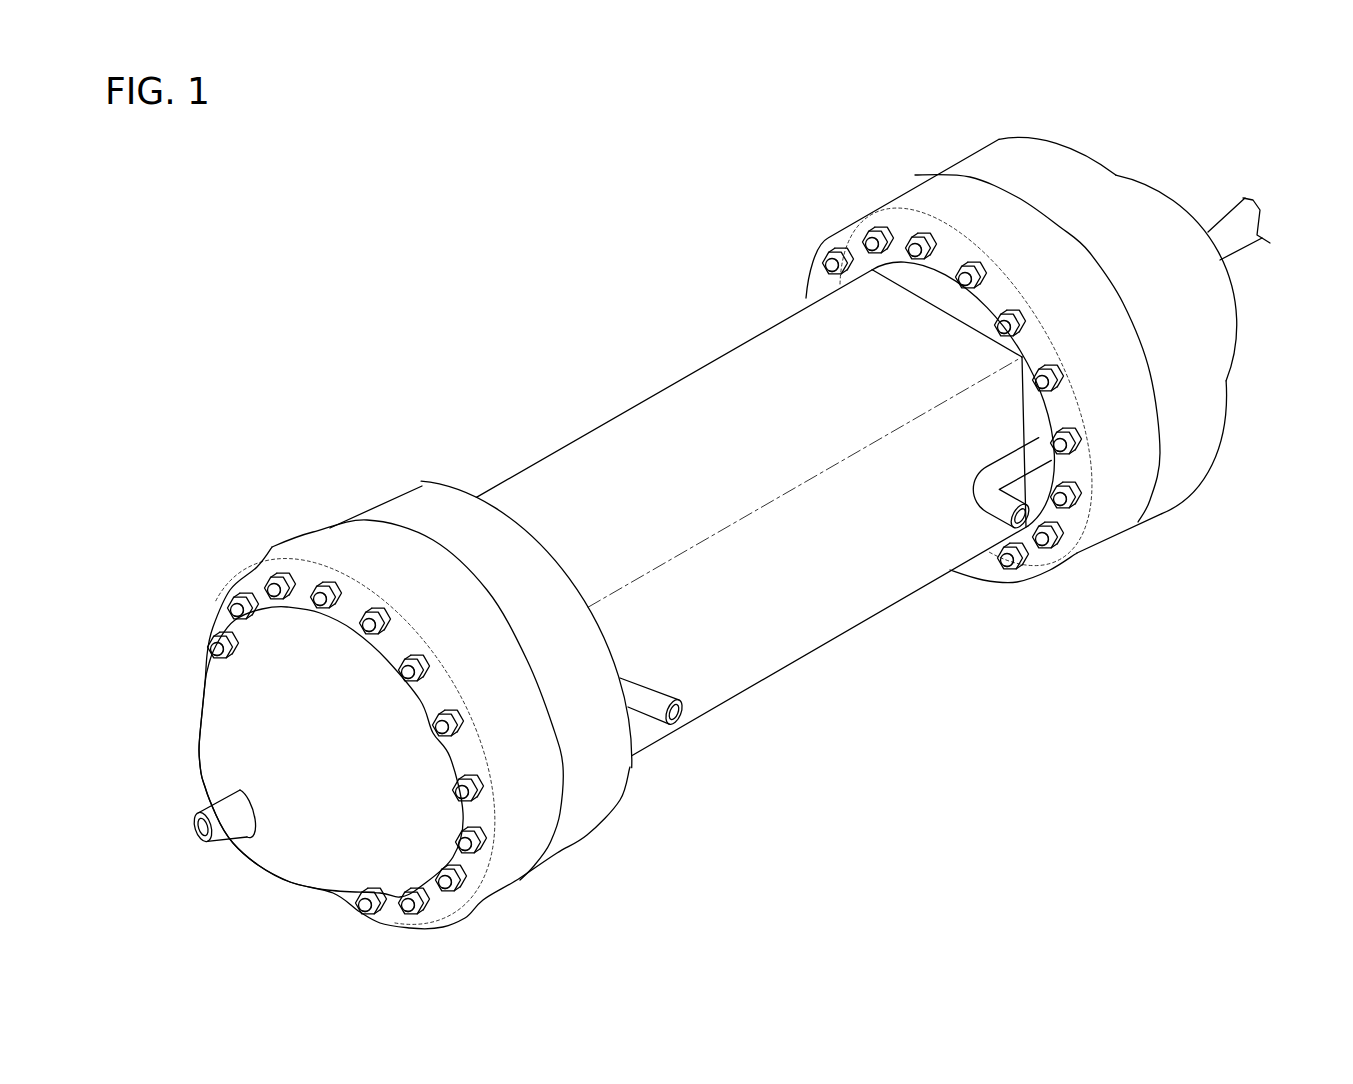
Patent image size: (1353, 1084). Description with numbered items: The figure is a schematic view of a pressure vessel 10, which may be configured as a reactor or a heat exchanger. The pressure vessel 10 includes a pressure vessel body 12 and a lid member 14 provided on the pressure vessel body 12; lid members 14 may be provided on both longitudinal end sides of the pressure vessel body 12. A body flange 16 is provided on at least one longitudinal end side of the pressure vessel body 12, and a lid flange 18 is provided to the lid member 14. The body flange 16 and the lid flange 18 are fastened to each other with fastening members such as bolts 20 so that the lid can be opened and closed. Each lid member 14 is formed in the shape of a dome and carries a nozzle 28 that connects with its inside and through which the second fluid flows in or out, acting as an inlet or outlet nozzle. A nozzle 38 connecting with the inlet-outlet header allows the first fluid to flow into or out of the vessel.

The pressure vessel 10 is at (410, 358).
The pressure vessel body 12 is at (653, 412).
The lid member 14 is at (212, 748).
The body flange 16 is at (405, 492).
The lid flange 18 is at (322, 543).
The bolts 20 is at (215, 607).
The nozzle 28 is at (232, 840).
The nozzle 38 is at (673, 680).